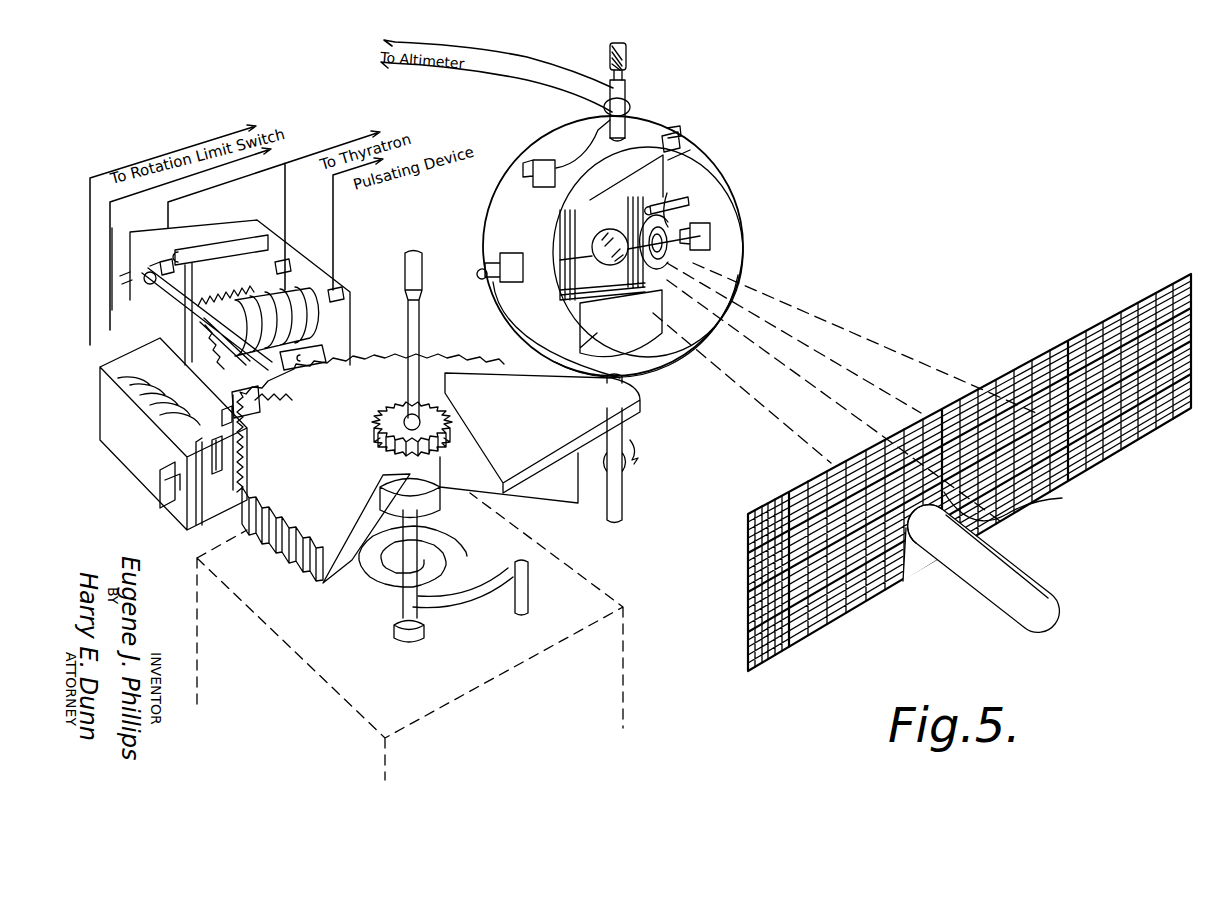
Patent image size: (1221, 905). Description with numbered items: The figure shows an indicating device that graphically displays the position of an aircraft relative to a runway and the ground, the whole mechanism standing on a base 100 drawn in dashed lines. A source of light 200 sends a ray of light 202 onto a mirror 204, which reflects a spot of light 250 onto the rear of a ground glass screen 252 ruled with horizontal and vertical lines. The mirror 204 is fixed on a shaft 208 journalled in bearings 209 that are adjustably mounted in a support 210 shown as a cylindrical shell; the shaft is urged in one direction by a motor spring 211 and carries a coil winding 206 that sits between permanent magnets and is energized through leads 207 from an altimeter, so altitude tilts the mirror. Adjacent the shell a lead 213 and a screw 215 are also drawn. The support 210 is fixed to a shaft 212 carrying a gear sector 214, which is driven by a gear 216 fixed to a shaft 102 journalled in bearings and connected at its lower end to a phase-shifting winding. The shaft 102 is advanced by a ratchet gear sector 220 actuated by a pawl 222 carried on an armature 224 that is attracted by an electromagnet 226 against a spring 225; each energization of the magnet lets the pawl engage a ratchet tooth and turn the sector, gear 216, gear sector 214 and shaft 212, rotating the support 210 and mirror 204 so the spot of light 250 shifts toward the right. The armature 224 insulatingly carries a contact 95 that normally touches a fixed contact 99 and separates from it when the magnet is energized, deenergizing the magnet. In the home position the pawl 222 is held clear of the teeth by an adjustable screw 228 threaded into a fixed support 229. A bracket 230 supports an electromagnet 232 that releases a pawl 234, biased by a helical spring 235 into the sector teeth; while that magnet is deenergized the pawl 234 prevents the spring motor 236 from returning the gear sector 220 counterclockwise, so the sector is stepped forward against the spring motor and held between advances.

The contact 95 is at (150, 285).
The fixed contact 99 is at (160, 266).
The base 100 is at (622, 646).
The shaft 102 is at (420, 300).
The source of light 200 is at (1022, 582).
The ray of light 202 is at (722, 392).
The mirror 204 is at (612, 237).
The coil winding 206 is at (660, 200).
The leads 207 is at (545, 92).
The shaft 208 is at (693, 243).
The bearings 209 is at (703, 238).
The support 210 is at (498, 208).
The motor spring 211 is at (688, 201).
The shaft 212 is at (630, 380).
The lead 213 is at (667, 193).
The gear sector 214 is at (533, 384).
The screw 215 is at (660, 172).
The gear 216 is at (430, 406).
The ratchet gear sector 220 is at (383, 364).
The pawl 222 is at (294, 374).
The armature 224 is at (218, 364).
The spring 225 is at (216, 296).
The electromagnet 226 is at (288, 306).
The screw 228 is at (272, 398).
The fixed support 229 is at (256, 418).
The bracket 230 is at (125, 448).
The electromagnet 232 is at (104, 374).
The pawl 234 is at (222, 476).
The helical spring 235 is at (204, 530).
The spring motor 236 is at (466, 548).
The spot of light 250 is at (1062, 498).
The ground glass screen 252 is at (856, 604).